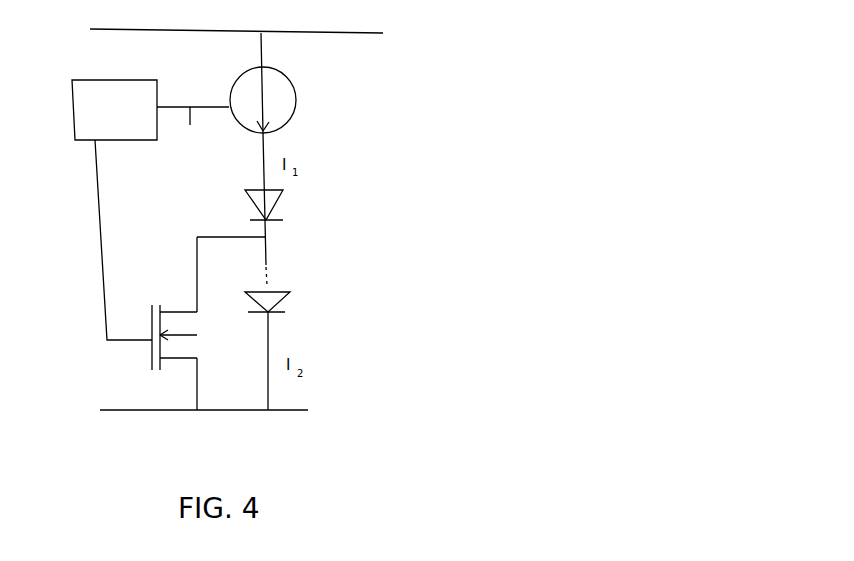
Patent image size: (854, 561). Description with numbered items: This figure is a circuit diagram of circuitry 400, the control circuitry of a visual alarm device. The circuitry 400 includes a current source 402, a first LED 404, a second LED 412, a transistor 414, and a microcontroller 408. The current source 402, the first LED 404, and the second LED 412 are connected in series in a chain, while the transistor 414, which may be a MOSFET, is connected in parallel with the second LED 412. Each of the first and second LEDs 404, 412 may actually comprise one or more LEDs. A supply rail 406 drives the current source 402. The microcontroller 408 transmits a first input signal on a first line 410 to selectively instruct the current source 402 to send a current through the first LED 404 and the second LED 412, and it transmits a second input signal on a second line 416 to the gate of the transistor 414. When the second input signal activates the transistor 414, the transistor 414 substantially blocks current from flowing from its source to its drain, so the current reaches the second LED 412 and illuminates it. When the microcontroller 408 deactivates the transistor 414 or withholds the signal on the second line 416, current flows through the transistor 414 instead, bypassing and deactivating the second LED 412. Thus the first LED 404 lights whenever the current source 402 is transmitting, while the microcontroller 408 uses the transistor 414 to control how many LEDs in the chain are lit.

The circuitry 400 is at (504, 40).
The current source 402 is at (293, 88).
The first LED 404 is at (303, 186).
The supply rail 406 is at (165, 28).
The microcontroller 408 is at (137, 81).
The first line 410 is at (193, 129).
The second LED 412 is at (303, 276).
The transistor 414 is at (150, 348).
The second line 416 is at (100, 228).